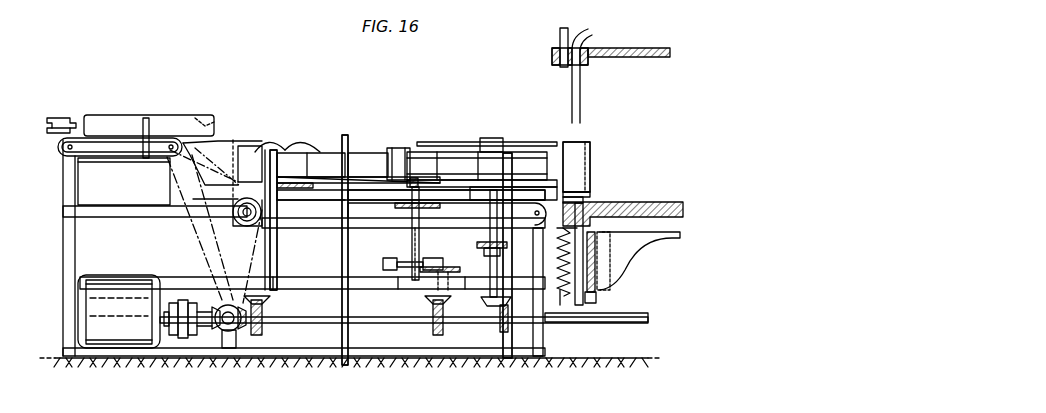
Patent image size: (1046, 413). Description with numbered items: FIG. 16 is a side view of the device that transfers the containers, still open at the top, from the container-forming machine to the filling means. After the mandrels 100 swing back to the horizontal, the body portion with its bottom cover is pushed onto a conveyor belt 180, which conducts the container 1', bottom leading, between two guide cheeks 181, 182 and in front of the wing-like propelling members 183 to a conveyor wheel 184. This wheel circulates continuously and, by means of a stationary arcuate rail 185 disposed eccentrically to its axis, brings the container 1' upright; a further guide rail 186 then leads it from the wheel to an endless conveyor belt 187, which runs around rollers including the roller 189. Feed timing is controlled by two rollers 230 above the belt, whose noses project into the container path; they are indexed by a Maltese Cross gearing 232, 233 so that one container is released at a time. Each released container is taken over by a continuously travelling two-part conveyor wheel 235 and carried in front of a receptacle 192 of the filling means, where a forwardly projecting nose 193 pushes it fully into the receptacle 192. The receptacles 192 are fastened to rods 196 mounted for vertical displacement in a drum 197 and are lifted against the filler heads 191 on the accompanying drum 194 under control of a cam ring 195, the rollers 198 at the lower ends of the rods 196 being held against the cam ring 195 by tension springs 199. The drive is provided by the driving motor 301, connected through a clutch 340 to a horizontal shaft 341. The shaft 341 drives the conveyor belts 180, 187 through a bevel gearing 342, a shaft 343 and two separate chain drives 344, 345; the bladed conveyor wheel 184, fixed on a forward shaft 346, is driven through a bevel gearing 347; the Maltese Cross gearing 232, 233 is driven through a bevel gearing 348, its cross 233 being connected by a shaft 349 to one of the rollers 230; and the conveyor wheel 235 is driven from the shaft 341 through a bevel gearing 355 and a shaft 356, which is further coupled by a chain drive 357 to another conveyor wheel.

The mandrel 100 is at (58, 116).
The guide cheek 182 is at (118, 115).
The guide cheek 181 is at (147, 118).
The container 1' is at (204, 100).
The conveyor belt 180 is at (110, 166).
The wing-like propelling member 183 is at (241, 150).
The conveyor wheel 184 is at (266, 140).
The guide rail 186 is at (300, 146).
The stationary arcuate rail 185 is at (348, 140).
The roller 230 is at (400, 148).
The two-part conveyor wheel 235 is at (462, 165).
The nose 193 is at (560, 148).
The receptacle 192 is at (588, 163).
The filler head 191 is at (550, 57).
The drum 194 is at (650, 58).
The drum 197 is at (668, 203).
The roller 189 is at (583, 197).
The rod 196 is at (579, 249).
The cam ring 195 is at (640, 248).
The roller 198 is at (597, 298).
The tension spring 199 is at (560, 306).
The endless conveyor belt 187 is at (385, 200).
The driving motor 301 is at (120, 280).
The chain drive 344 is at (198, 258).
The forward shaft 346 is at (278, 240).
The chain drive 345 is at (268, 260).
The shaft 349 is at (410, 240).
The cross of the Maltese Cross gearing 233 is at (386, 264).
The Maltese Cross gearing 232 is at (477, 245).
The chain drive 357 is at (497, 240).
The shaft 356 is at (500, 280).
The bevel gearing 347 is at (264, 332).
The horizontal shaft 341 is at (381, 323).
The bevel gearing 348 is at (444, 332).
The clutch 340 is at (182, 338).
The bevel gearing 342 is at (214, 330).
The shaft 343 is at (238, 332).
The bevel gearing 355 is at (500, 340).